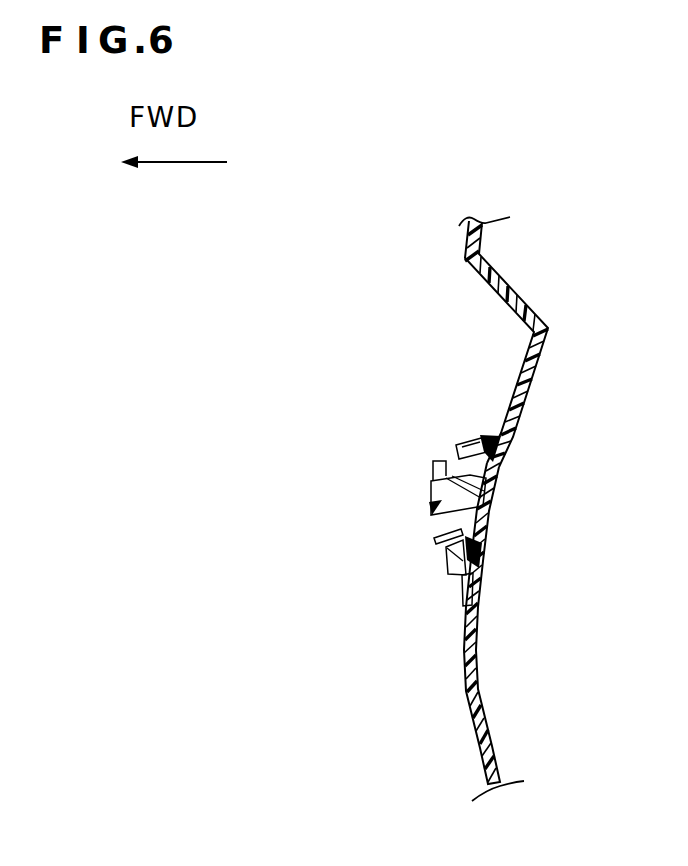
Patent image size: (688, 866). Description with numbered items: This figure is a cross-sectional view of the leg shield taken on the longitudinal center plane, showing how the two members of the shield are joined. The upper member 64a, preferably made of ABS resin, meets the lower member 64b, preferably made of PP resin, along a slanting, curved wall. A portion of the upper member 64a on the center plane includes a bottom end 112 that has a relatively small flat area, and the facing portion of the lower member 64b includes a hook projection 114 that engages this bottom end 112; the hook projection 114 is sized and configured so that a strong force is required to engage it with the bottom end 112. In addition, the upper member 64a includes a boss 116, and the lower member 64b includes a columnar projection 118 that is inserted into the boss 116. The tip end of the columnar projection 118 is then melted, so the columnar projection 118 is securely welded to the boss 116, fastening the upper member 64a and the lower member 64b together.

The upper member 64a is at (529, 296).
The lower member 64b is at (478, 622).
The bottom end 112 is at (486, 442).
The hook projection 114 is at (461, 447).
The boss 116 is at (428, 483).
The columnar projection 118 is at (434, 545).